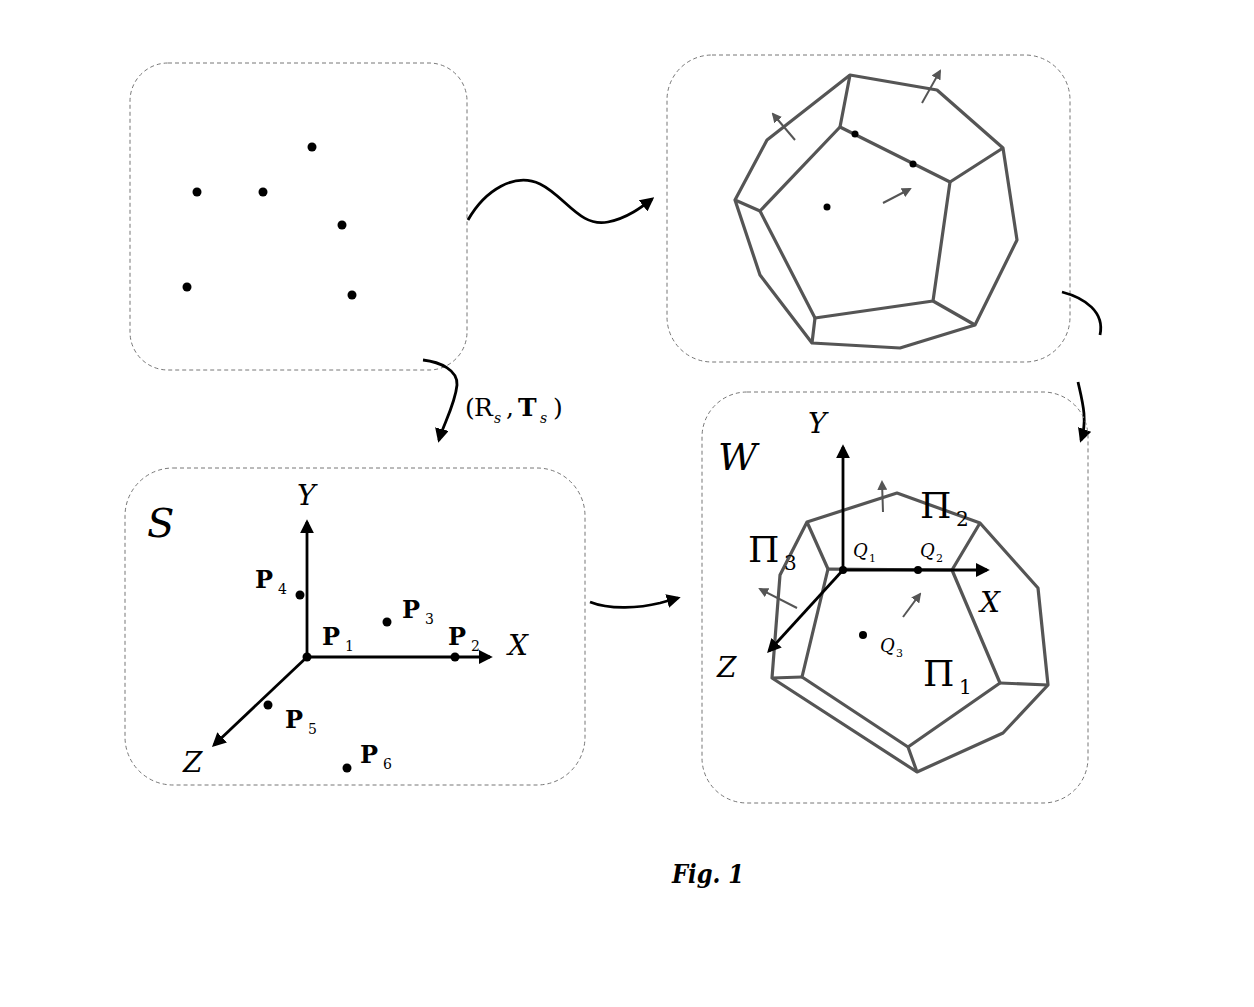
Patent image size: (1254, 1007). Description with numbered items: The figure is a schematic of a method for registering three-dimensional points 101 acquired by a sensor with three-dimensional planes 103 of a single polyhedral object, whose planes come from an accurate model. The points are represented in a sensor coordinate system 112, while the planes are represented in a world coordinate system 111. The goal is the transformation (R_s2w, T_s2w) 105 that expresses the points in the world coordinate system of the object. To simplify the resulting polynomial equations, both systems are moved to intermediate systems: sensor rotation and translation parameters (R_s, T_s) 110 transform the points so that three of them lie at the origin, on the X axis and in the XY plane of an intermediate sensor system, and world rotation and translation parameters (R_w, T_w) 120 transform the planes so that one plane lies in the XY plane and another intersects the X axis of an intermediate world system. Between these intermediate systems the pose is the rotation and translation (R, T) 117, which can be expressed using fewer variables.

The 3D points 101 is at (452, 177).
The 3D planes 103 is at (1093, 193).
The rotation and translation parameters (R_s2w, T_s2w) 105 is at (607, 145).
The sensor rotation and translation parameters (R_s, T_s) 110 is at (643, 410).
The world coordinate system 111 is at (1127, 107).
The sensor coordinate system 112 is at (510, 87).
The rotation and translation (R, T) 117 is at (660, 543).
The world rotation and translation parameters (R_w, T_w) 120 is at (1187, 363).